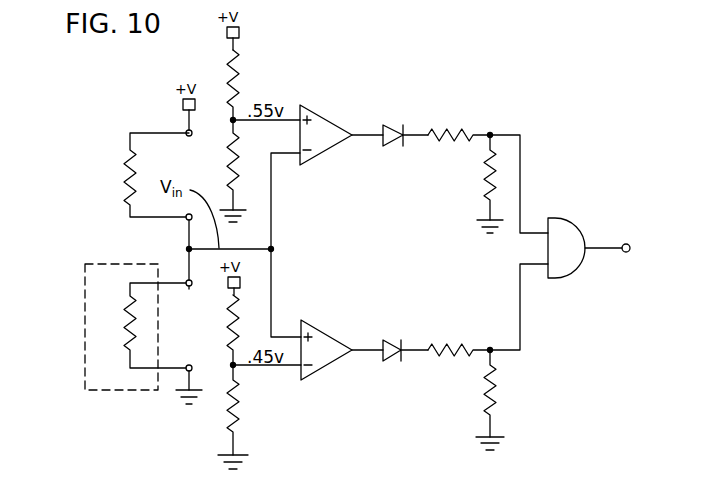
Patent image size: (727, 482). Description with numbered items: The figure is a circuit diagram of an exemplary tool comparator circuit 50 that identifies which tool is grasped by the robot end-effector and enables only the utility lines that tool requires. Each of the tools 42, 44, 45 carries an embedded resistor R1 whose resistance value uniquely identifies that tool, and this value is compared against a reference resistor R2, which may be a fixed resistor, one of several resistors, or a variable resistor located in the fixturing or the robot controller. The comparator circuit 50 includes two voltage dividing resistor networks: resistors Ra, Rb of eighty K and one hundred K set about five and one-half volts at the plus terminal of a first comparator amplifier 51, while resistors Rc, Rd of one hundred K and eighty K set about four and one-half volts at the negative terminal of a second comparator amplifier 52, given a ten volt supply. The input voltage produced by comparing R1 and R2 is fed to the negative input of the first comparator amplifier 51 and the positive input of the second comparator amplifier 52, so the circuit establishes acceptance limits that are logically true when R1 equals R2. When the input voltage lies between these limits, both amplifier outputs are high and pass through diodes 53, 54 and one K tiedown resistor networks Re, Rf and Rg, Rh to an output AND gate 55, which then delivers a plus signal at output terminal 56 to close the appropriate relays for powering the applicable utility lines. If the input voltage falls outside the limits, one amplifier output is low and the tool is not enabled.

The tool comparator circuit 50 is at (443, 113).
The first comparator amplifier 51 is at (318, 127).
The second comparator amplifier 52 is at (317, 357).
The diode 53 is at (392, 125).
The diode 54 is at (391, 358).
The output AND gate 55 is at (555, 226).
The output terminal 56 is at (624, 243).
The tool 42 is at (100, 347).
The tool 44 is at (100, 347).
The tool 45 is at (135, 392).
The resistor R1 is at (128, 335).
The reference resistor R2 is at (128, 188).
The voltage dividing resistor Ra is at (233, 65).
The voltage dividing resistor Rb is at (232, 160).
The voltage dividing resistor Rc is at (230, 323).
The voltage dividing resistor Rd is at (237, 418).
The tiedown resistor Re is at (462, 129).
The tiedown resistor Rf is at (486, 185).
The tiedown resistor Rg is at (465, 342).
The tiedown resistor Rh is at (494, 400).